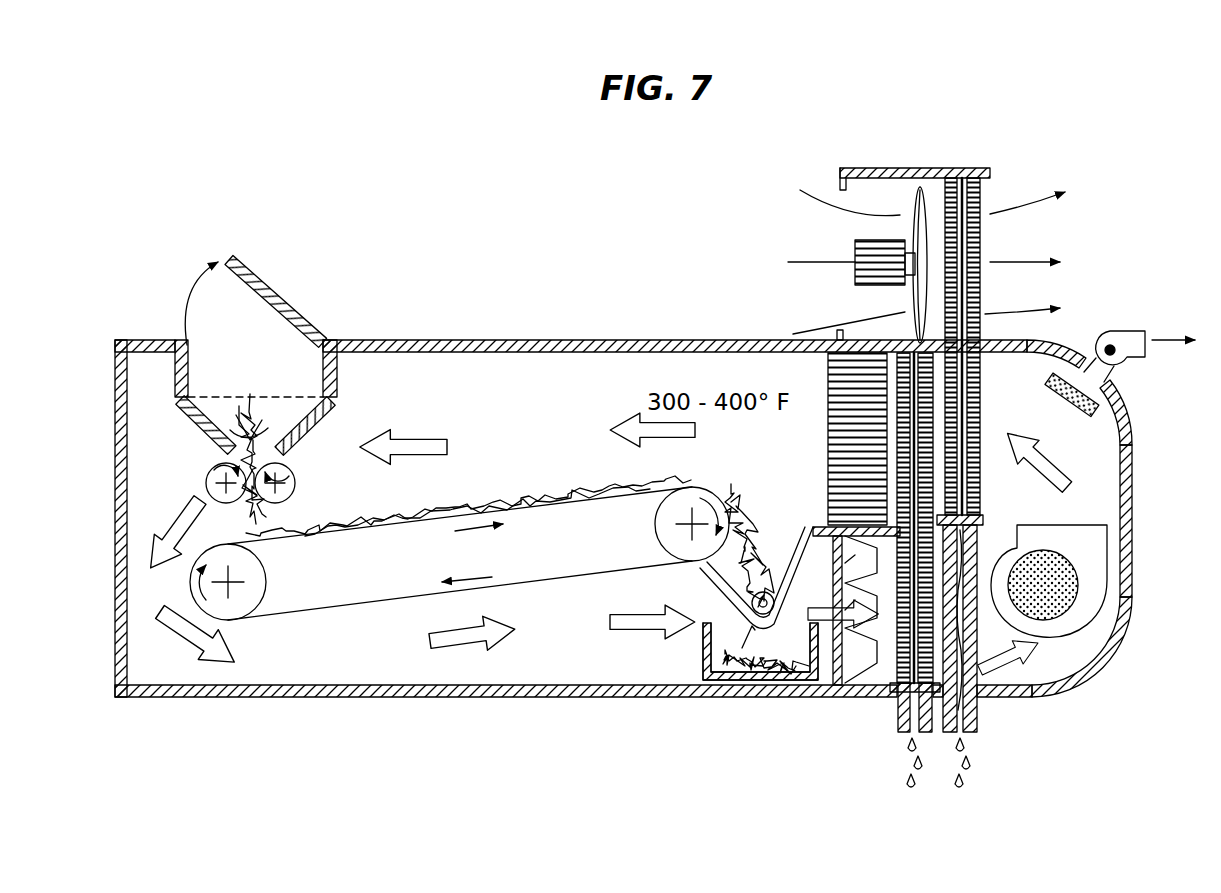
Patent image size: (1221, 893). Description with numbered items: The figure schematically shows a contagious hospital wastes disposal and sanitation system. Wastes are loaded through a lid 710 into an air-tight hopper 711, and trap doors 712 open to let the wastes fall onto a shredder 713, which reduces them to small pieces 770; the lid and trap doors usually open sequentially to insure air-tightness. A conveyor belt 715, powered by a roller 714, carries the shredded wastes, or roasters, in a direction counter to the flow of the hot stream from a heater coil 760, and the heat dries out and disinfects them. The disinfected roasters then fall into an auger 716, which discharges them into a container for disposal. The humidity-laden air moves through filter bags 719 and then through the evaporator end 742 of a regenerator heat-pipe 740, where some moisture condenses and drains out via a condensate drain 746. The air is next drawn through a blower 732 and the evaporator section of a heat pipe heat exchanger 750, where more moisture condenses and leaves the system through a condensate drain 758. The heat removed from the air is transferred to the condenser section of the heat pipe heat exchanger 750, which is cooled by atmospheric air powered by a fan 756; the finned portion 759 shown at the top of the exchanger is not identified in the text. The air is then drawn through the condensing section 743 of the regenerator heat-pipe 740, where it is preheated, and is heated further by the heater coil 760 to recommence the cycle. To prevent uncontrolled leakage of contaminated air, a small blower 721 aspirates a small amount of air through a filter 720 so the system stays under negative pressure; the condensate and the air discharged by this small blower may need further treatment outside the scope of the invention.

The lid 710 is at (268, 282).
The air-tight hopper 711 is at (273, 360).
The trap doors 712 is at (335, 404).
The shredder 713 is at (212, 471).
The roller 714 is at (268, 579).
The conveyor belt 715 is at (400, 526).
The auger 716 is at (740, 606).
The filter bags 719 is at (815, 525).
The filter 720 is at (1072, 390).
The small blower 721 is at (1118, 332).
The blower 732 is at (1107, 560).
The regenerator heat-pipe 740 is at (853, 688).
The evaporator end 742 is at (893, 630).
The condensing section 743 is at (900, 377).
The condensate drain 746 is at (915, 650).
The heat pipe heat exchanger 750 is at (1000, 165).
The fan 756 is at (855, 250).
The condensate drain 758 is at (978, 728).
The heat exchanger fins 759 is at (985, 205).
The heater coil 760 is at (828, 368).
The small pieces 770 is at (468, 493).